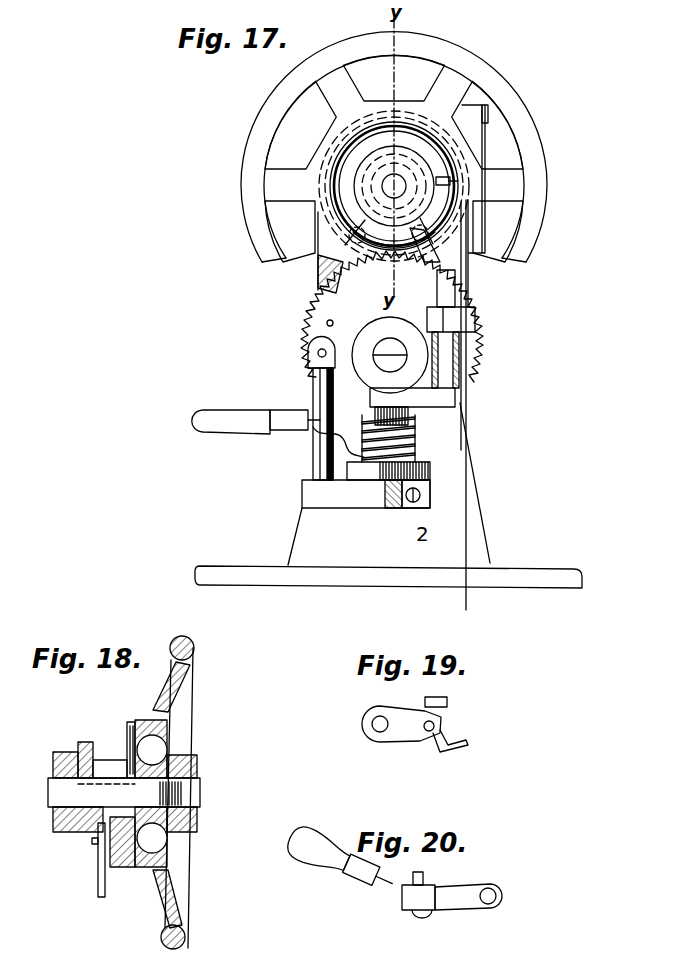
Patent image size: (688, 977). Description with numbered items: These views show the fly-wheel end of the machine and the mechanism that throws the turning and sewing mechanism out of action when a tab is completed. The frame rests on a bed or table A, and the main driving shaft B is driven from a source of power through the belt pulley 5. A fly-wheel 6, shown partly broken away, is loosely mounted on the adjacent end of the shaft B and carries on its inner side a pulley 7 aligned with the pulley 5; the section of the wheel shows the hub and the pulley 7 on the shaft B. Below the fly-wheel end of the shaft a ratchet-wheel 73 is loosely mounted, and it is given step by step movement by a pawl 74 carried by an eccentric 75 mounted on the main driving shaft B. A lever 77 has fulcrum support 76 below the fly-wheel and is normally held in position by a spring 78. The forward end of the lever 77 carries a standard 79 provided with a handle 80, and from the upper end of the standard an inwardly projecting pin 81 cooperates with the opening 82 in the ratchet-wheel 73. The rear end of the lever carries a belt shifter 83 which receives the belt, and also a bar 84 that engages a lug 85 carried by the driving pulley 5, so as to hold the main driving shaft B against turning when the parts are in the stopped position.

In FIG. 18, the belt pulley 5 is at (122, 867).
In FIG. 17, the fly-wheel 6 is at (528, 120).
In FIG. 18, the fly-wheel 6 is at (185, 701).
In FIG. 18, the pulley 7 is at (143, 723).
In FIG. 17, the ratchet-wheel 73 is at (300, 332).
In FIG. 17, the pawl 74 is at (318, 276).
In FIG. 17, the eccentric 75 is at (412, 147).
In FIG. 18, the eccentric 75 is at (95, 752).
In FIG. 17, the fulcrum support 76 is at (412, 415).
In FIG. 17, the lever 77 is at (378, 448).
In FIG. 19, the lever 77 is at (400, 735).
In FIG. 20, the lever 77 is at (452, 901).
In FIG. 17, the spring 78 is at (417, 450).
In FIG. 17, the standard 79 is at (317, 450).
In FIG. 17, the handle 80 is at (228, 431).
In FIG. 20, the handle 80 is at (318, 858).
In FIG. 17, the pin 81 is at (318, 355).
In FIG. 20, the pin 81 is at (423, 878).
In FIG. 17, the opening 82 is at (325, 321).
In FIG. 17, the belt shifter 83 is at (475, 312).
In FIG. 19, the belt shifter 83 is at (466, 747).
In FIG. 17, the bar 84 is at (455, 283).
In FIG. 19, the bar 84 is at (447, 702).
In FIG. 17, the lug 85 is at (436, 258).
In FIG. 18, the lug 85 is at (103, 885).
In FIG. 17, the bed or table A is at (520, 578).
In FIG. 17, the main driving shaft B is at (394, 186).
In FIG. 18, the main driving shaft B is at (124, 792).